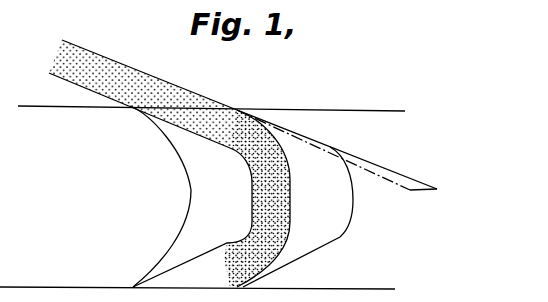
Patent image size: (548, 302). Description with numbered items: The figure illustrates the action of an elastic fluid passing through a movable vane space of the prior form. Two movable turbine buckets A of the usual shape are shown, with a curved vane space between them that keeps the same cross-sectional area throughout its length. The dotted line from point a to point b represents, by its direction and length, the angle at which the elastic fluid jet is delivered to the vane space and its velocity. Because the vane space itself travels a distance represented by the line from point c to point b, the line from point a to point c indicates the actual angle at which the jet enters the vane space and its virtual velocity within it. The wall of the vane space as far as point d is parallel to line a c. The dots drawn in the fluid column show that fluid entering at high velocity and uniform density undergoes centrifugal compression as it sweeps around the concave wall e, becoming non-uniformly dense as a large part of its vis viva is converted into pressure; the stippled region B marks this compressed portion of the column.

The point a is at (235, 101).
The point b is at (343, 157).
The point c is at (337, 158).
The wall of the vane space d is at (173, 196).
The concave wall e is at (292, 198).
The movable turbine bucket A is at (281, 217).
The bent portion B is at (169, 163).